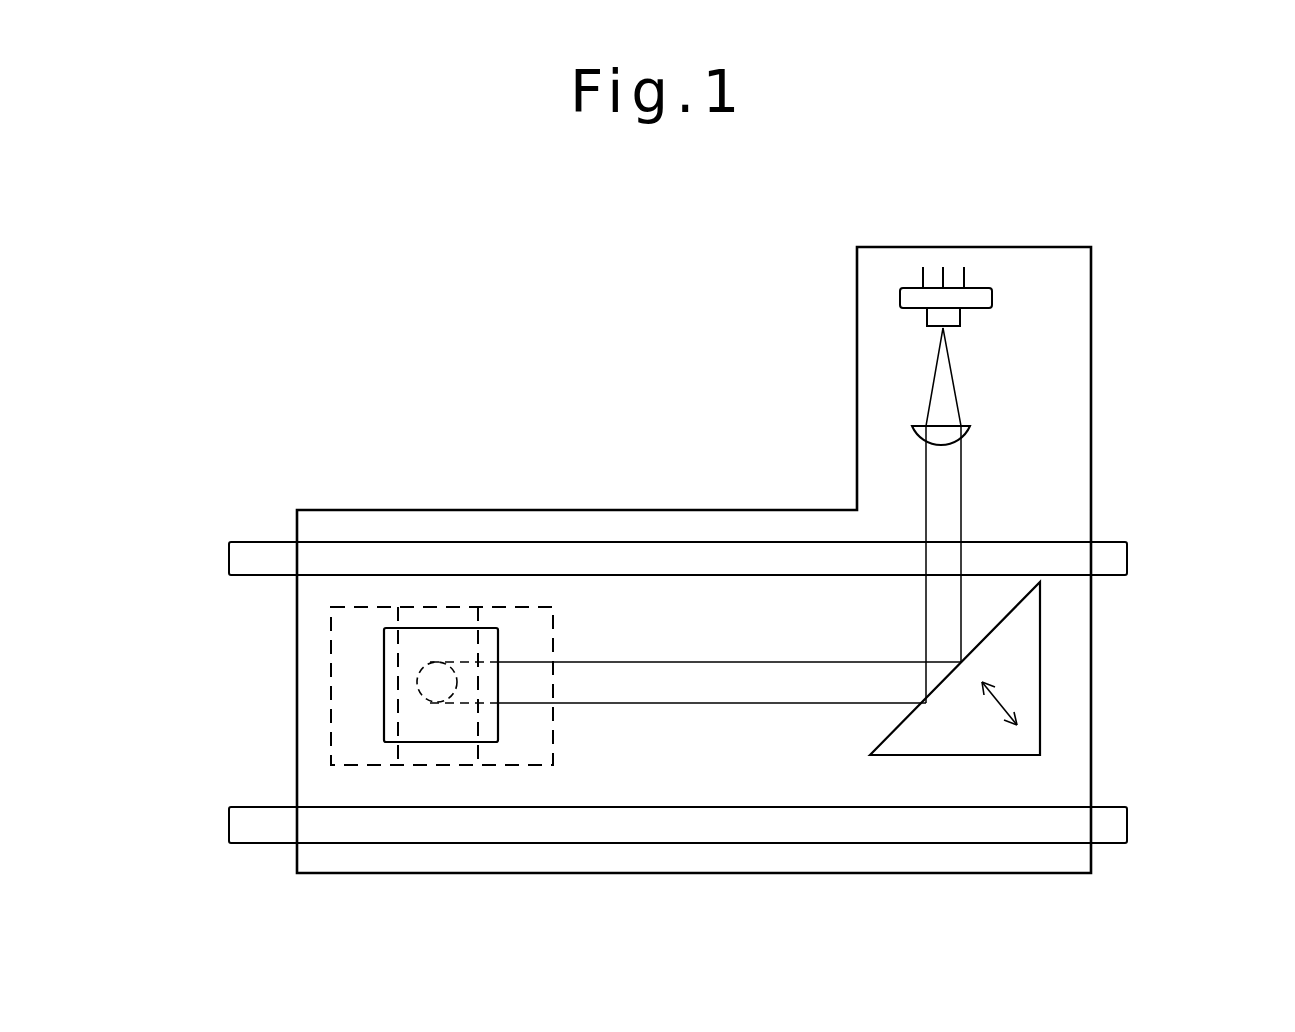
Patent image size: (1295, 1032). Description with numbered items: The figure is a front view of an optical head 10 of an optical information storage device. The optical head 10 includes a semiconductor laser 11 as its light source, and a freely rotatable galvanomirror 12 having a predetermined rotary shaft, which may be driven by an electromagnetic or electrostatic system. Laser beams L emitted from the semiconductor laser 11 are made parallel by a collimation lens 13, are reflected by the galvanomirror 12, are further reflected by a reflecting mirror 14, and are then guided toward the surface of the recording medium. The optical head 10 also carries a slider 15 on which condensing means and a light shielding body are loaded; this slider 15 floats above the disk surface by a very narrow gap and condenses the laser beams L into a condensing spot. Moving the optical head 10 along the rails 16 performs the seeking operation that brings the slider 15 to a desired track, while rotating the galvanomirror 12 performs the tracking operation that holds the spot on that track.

The optical head 10 is at (1158, 416).
The semiconductor laser 11 is at (978, 297).
The galvanomirror 12 is at (1040, 705).
The collimation lens 13 is at (965, 437).
The reflecting mirror 14 is at (430, 635).
The slider 15 is at (331, 693).
The rails 16 is at (1115, 835).
The laser beams L is at (937, 480).